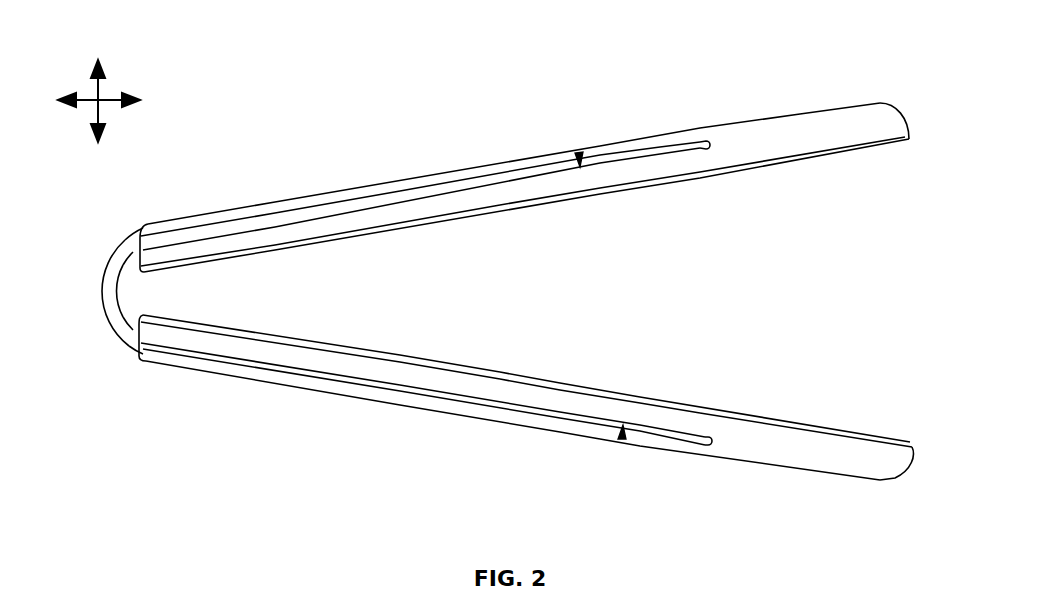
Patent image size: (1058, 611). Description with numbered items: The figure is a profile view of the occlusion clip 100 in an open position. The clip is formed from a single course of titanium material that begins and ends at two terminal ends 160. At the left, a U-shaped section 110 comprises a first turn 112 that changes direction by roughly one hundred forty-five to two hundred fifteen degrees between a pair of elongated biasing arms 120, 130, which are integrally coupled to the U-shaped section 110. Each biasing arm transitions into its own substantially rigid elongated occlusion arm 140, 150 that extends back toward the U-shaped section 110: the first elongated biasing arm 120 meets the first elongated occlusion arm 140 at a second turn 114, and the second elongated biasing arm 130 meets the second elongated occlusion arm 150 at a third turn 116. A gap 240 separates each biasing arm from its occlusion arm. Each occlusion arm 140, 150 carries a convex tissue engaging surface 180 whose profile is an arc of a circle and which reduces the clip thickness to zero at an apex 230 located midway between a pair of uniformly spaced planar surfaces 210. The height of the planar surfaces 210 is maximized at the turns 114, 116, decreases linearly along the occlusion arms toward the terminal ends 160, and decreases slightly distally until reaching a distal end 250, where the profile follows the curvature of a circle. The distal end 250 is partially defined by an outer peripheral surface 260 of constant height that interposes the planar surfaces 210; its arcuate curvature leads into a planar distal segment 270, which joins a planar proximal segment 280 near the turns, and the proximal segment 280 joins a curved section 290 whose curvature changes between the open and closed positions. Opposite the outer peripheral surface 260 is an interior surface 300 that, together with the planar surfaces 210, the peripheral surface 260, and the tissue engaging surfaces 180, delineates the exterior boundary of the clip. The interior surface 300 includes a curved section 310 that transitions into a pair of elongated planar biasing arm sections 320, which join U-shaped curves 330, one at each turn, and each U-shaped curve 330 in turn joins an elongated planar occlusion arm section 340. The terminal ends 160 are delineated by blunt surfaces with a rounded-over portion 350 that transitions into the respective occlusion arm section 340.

The occlusion clip 100 is at (876, 37).
The U-shaped section 110 is at (118, 340).
The first turn 112 is at (108, 287).
The second turn 114 is at (722, 130).
The third turn 116 is at (720, 444).
The first elongated biasing arm 120 is at (392, 186).
The second elongated biasing arm 130 is at (468, 410).
The first elongated occlusion arm 140 is at (472, 200).
The second elongated occlusion arm 150 is at (480, 379).
The terminal end 160 is at (120, 258).
The tissue engaging surface 180 is at (562, 197).
The planar surfaces 210 is at (638, 176).
The apex 230 is at (731, 178).
The gap 240 is at (578, 153).
The distal end 250 is at (906, 118).
The outer peripheral surface 260 is at (247, 207).
The planar distal segment 270 is at (787, 468).
The planar proximal segment 280 is at (385, 401).
The curved section 290 is at (100, 307).
The interior surface 300 is at (119, 307).
The curved section 310 is at (119, 292).
The elongated planar biasing arm sections 320 is at (490, 175).
The U-shaped curves 330 is at (700, 142).
The elongated planar occlusion arm section 340 is at (333, 212).
The rounded-over portion 350 is at (134, 251).